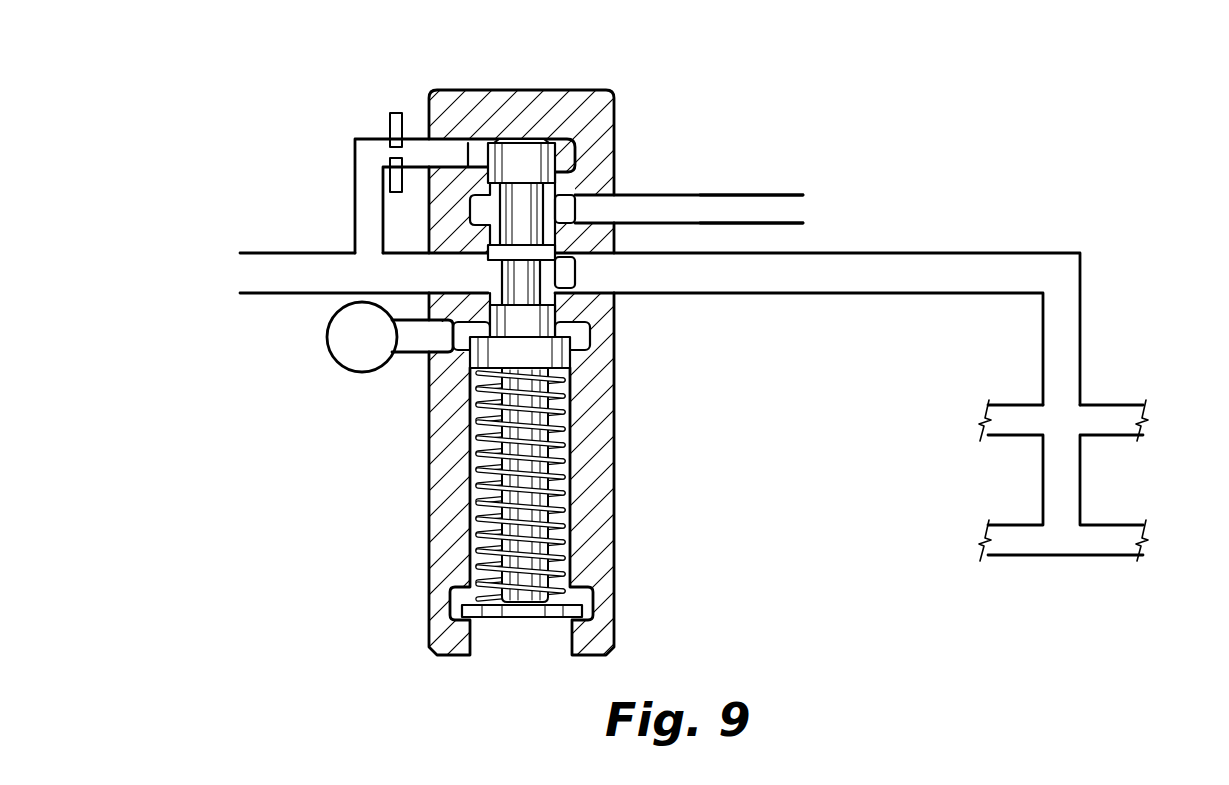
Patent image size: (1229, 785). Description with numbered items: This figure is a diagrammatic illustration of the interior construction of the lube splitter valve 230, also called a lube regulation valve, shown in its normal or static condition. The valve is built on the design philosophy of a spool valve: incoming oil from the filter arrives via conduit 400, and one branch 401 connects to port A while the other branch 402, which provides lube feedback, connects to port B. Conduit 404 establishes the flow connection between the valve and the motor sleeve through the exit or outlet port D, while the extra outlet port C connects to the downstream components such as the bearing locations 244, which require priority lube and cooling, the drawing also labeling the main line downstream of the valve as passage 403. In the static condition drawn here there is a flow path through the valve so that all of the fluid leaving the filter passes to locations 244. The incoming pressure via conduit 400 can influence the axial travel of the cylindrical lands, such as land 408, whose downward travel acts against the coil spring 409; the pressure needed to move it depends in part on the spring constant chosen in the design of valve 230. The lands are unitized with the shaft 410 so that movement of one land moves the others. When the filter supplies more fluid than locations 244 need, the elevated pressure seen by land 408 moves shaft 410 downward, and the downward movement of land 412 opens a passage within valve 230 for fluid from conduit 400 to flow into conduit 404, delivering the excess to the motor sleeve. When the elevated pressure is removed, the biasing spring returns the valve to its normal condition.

The lube splitter valve 230 is at (455, 528).
The conduit 400 is at (283, 268).
The branch 401 is at (405, 273).
The branch conduit 402 is at (417, 148).
The outlet passage 403 is at (730, 275).
The conduit 404 is at (734, 212).
The land 408 is at (527, 325).
The coil spring 409 is at (555, 540).
The shaft 410 is at (500, 270).
The land 412 is at (565, 212).
The bearing locations 244 is at (1110, 376).